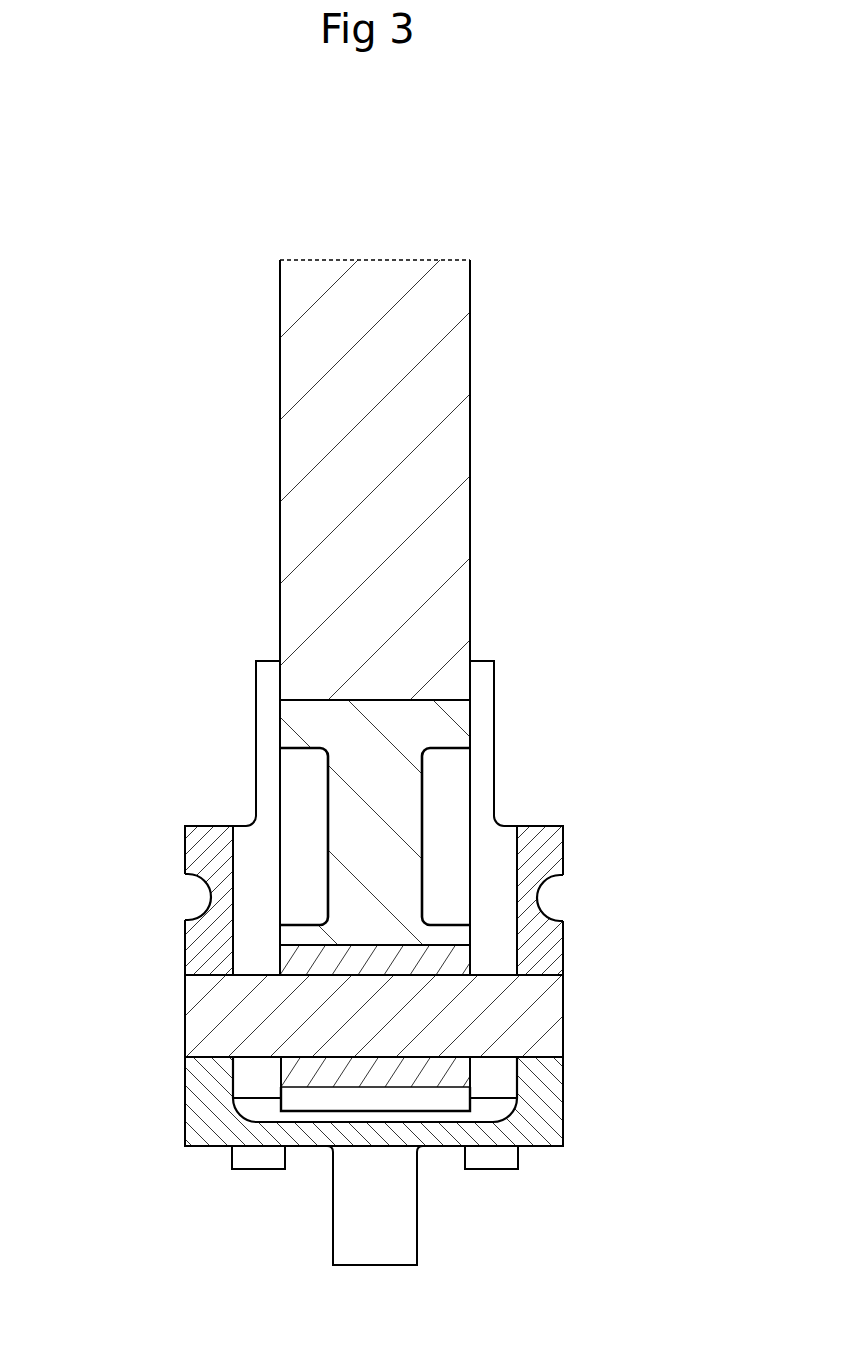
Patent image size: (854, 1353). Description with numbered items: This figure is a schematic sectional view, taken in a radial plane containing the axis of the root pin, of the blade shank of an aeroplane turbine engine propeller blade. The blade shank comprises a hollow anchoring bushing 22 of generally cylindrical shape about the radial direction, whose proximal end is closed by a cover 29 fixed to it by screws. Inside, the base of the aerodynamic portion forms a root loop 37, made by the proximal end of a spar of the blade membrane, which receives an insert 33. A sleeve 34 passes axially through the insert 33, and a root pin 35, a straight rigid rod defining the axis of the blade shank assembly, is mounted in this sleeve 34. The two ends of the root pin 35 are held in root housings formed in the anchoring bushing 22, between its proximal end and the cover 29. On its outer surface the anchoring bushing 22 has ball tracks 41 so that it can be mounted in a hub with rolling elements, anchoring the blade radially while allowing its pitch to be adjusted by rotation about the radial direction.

The anchoring bushing 22 is at (548, 952).
The cover 29 is at (547, 1117).
The insert 33 is at (400, 782).
The sleeve 34 is at (322, 1070).
The root pin 35 is at (530, 1022).
The root loop 37 is at (441, 1100).
The ball tracks 41 is at (198, 893).